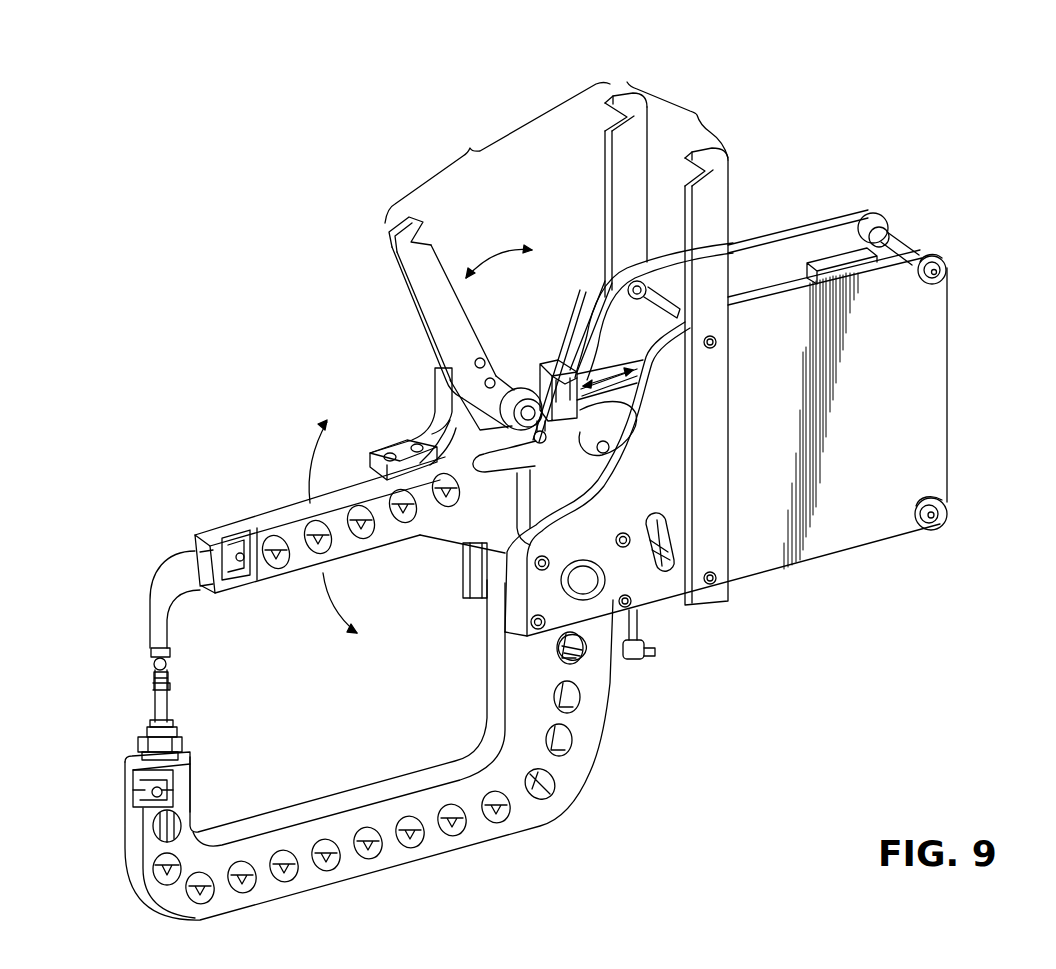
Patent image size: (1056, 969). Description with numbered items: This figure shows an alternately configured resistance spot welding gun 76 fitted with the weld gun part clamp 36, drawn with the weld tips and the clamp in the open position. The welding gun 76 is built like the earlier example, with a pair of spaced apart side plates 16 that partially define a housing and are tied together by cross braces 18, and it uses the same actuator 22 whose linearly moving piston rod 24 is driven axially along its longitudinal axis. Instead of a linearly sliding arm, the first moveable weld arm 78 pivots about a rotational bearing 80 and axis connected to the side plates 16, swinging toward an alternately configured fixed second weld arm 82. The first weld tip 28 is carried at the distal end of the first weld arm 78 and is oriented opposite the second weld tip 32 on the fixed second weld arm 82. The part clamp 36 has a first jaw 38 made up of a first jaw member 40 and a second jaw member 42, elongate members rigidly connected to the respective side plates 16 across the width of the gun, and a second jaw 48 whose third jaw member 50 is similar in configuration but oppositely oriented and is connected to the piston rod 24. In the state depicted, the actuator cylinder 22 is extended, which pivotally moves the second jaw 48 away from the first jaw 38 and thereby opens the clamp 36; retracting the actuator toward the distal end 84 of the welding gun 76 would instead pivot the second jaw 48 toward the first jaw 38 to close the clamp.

The side plates 16 is at (880, 207).
The cross braces 18 is at (907, 242).
The actuator 22 is at (775, 280).
The piston rod 24 is at (602, 363).
The first weld tip 28 is at (172, 660).
The second weld tip 32 is at (170, 680).
The weld gun part clamp 36 is at (497, 153).
The first jaw 38 is at (677, 120).
The first jaw member 40 is at (730, 205).
The second jaw member 42 is at (602, 148).
The second jaw 48 is at (396, 268).
The third jaw member 50 is at (427, 327).
The welding gun 76 is at (950, 447).
The first moveable weld arm 78 is at (270, 502).
The rotational bearing 80 is at (590, 593).
The second weld arm 82 is at (482, 848).
The distal end 84 is at (950, 303).